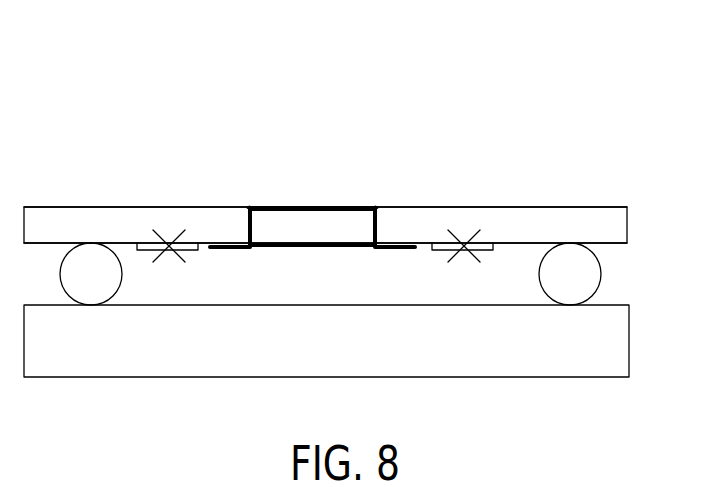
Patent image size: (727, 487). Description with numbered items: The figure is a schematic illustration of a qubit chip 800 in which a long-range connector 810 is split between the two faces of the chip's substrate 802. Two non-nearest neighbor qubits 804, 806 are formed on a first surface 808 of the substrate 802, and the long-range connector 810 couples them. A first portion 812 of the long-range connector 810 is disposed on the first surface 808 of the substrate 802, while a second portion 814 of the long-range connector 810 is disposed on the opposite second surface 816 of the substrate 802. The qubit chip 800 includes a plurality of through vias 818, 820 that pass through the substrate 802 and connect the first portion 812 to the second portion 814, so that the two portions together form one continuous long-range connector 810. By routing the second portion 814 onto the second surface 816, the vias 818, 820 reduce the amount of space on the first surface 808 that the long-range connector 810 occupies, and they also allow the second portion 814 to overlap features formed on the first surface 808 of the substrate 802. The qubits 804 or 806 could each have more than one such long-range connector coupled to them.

The qubit chip 800 is at (577, 91).
The substrate 802 is at (627, 224).
The qubit 804 is at (168, 252).
The qubit 806 is at (462, 252).
The first surface 808 is at (618, 244).
The long-range connector 810 is at (317, 166).
The first portion 812 is at (233, 252).
The second portion 814 is at (367, 207).
The second surface 816 is at (598, 207).
The through via 818 is at (248, 219).
The through via 820 is at (377, 215).